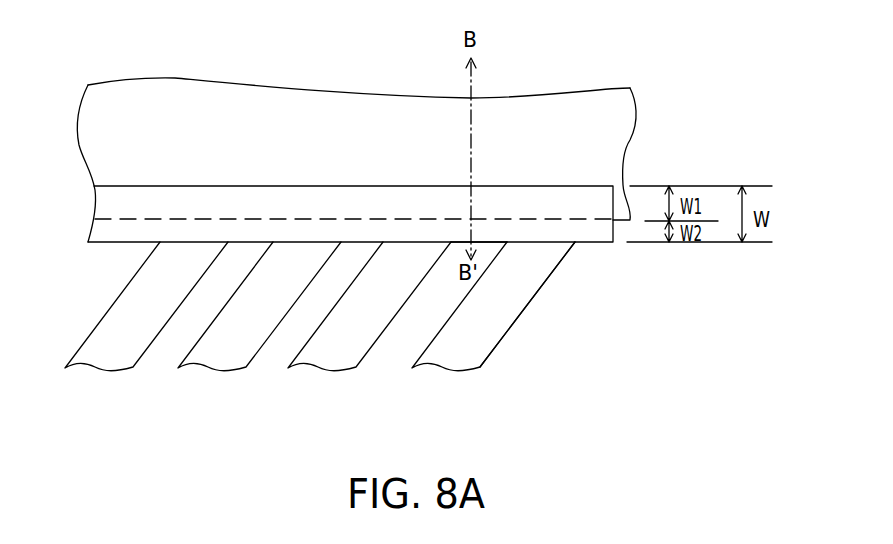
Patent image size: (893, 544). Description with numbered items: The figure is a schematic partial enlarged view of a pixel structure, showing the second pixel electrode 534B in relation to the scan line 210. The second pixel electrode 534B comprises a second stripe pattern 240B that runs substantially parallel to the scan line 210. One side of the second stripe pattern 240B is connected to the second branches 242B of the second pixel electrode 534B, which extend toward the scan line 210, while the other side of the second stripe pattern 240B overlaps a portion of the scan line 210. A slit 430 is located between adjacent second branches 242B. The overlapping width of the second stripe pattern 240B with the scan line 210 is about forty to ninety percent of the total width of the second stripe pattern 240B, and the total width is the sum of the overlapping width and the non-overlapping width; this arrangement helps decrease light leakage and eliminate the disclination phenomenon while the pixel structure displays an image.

The scan line 210 is at (612, 123).
The second stripe pattern 240B is at (590, 239).
The second branches 242B is at (503, 312).
The second pixel electrode 534B is at (541, 288).
The slit 430 is at (403, 322).